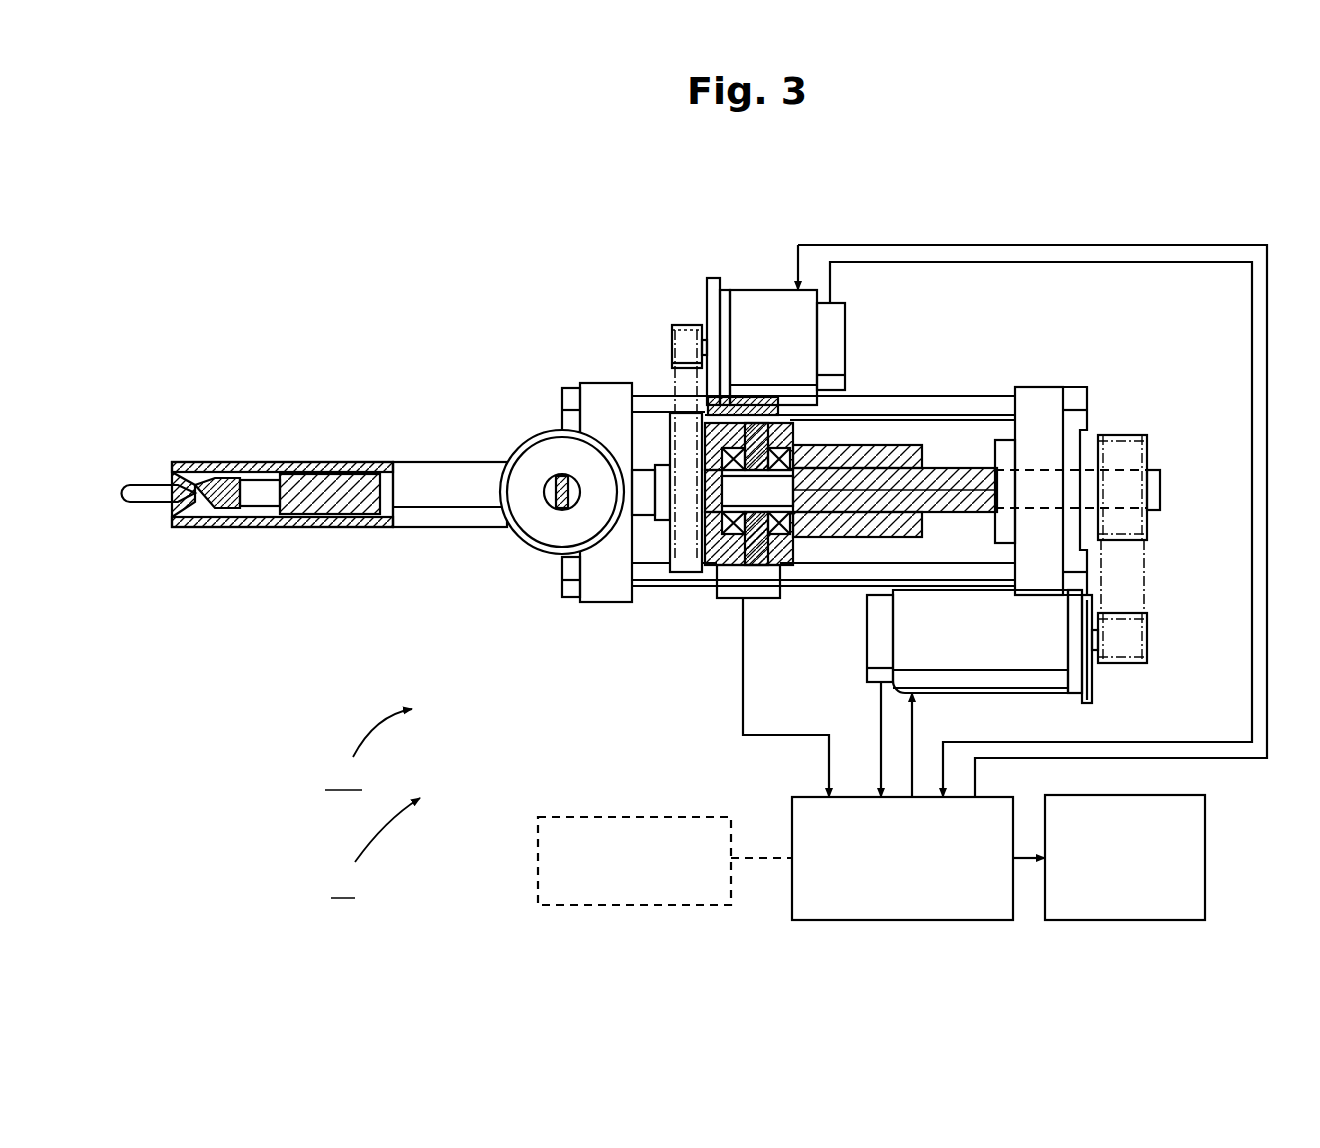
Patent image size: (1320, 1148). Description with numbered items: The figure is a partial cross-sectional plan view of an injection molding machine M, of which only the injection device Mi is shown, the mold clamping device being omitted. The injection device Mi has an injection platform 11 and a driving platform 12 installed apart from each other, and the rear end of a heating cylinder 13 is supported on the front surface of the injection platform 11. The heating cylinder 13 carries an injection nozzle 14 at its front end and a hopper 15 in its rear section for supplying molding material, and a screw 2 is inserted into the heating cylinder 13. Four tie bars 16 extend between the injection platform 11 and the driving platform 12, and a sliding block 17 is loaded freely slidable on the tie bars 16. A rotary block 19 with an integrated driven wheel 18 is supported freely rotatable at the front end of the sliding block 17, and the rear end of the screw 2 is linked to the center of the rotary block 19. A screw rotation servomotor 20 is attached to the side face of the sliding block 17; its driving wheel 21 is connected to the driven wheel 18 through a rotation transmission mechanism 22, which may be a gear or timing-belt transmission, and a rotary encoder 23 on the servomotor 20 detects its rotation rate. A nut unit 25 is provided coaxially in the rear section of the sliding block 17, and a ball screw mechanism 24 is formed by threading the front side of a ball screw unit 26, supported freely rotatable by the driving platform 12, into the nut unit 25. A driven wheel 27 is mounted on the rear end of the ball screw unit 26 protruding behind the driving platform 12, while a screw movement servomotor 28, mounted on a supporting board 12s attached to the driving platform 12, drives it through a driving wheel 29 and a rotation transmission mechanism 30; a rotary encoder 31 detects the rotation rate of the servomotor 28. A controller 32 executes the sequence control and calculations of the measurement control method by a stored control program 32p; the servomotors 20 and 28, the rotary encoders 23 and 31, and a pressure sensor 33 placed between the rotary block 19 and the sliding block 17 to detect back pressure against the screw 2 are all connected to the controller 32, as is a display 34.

The screw 2 is at (318, 462).
The injection platform 11 is at (587, 383).
The driving platform 12 is at (1087, 402).
The supporting board 12s is at (1092, 700).
The heating cylinder 13 is at (312, 528).
The injection nozzle 14 is at (140, 485).
The hopper 15 is at (530, 437).
The tie bars 16 is at (1000, 395).
The sliding block 17 is at (798, 540).
The driven wheel 18 is at (665, 535).
The rotary block 19 is at (820, 450).
The screw rotation servomotor 20 is at (752, 290).
The driving wheel 21 is at (672, 340).
The rotation transmission mechanism 22 is at (662, 378).
The rotary encoder 23 is at (845, 315).
The ball screw mechanism 24 is at (893, 443).
The nut unit 25 is at (920, 445).
The ball screw unit 26 is at (960, 400).
The driven wheel 27 is at (1147, 458).
The screw movement servomotor 28 is at (955, 696).
The driving wheel 29 is at (1150, 640).
The rotation transmission mechanism 30 is at (1147, 568).
The rotary encoder 31 is at (866, 670).
The controller 32 is at (792, 797).
The control program 32p is at (640, 817).
The pressure sensor 33 is at (775, 560).
The display 34 is at (1205, 858).
The injection device Mi is at (368, 750).
The injection molding machine M is at (375, 848).